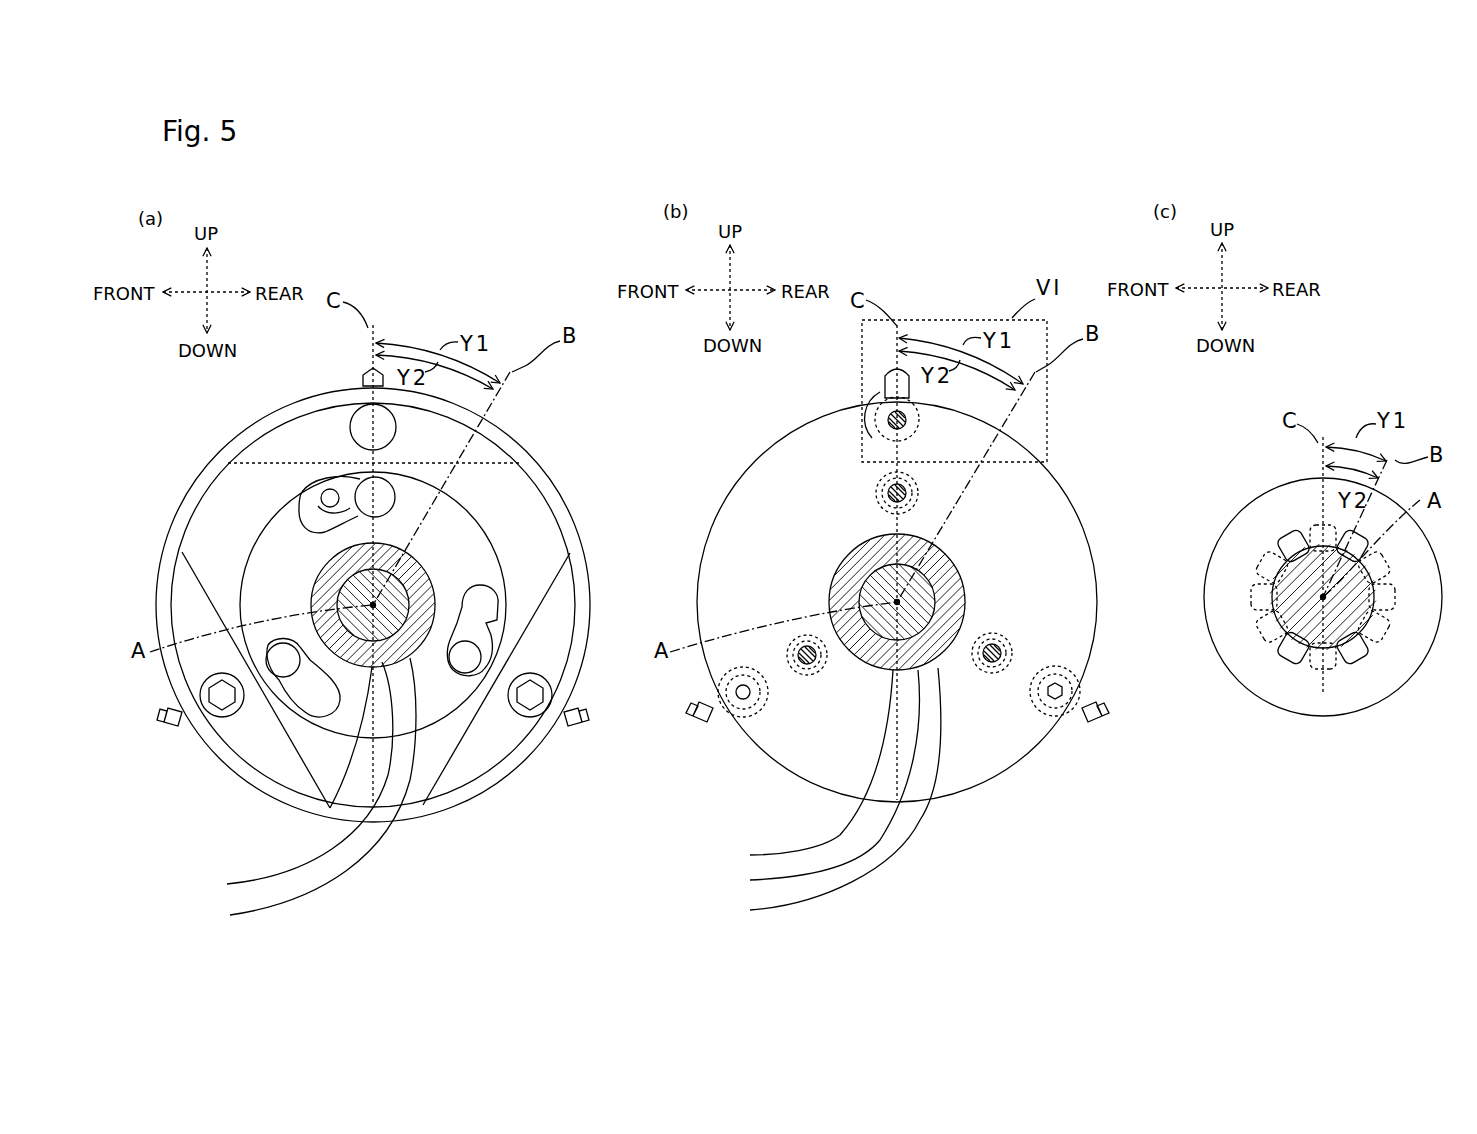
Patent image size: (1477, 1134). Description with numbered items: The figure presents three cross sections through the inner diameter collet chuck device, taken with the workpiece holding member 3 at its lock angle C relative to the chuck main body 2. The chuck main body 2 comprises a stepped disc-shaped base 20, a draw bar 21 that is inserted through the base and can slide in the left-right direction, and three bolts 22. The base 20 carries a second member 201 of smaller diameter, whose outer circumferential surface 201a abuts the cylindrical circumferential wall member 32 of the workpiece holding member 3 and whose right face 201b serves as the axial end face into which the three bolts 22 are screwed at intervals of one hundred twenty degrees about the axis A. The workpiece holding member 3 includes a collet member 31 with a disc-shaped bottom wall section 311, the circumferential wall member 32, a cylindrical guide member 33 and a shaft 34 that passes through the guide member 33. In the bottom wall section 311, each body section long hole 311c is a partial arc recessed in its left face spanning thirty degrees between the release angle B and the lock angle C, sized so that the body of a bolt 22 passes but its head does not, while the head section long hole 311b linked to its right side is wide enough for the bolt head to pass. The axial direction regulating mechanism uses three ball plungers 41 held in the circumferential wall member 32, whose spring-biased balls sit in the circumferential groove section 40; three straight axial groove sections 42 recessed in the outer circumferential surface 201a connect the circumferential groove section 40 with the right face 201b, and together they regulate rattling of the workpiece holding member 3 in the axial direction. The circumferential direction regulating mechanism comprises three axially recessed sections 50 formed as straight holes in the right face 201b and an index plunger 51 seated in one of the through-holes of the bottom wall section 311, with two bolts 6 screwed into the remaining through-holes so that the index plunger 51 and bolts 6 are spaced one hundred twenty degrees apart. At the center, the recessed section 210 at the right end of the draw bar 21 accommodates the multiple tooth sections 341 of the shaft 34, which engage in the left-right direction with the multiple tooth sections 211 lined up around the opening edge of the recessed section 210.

The chuck main body 2 is at (735, 390).
The workpiece holding member 3 is at (205, 392).
The bolt 6 is at (222, 700).
The base 20 is at (773, 738).
The draw bar 21 is at (1265, 440).
The bolt 22 is at (394, 492).
The collet member 31 is at (567, 793).
The circumferential wall member 32 is at (275, 787).
The guide member 33 is at (556, 779).
The shaft 34 is at (330, 808).
The circumferential groove section 40 is at (1046, 461).
The ball plunger 41 is at (362, 378).
The axial groove section 42 is at (988, 412).
The axially recessed section 50 is at (886, 426).
The index plunger 51 is at (363, 405).
The second member 201 is at (808, 765).
The outer circumferential surface 201a is at (942, 778).
The right face 201b is at (957, 793).
The recessed section 210 is at (1352, 662).
The tooth section 211 is at (1294, 662).
The bottom wall section 311 is at (447, 780).
The head section long hole 311b is at (302, 493).
The body section long hole 311c is at (335, 488).
The tooth section 341 is at (1323, 672).